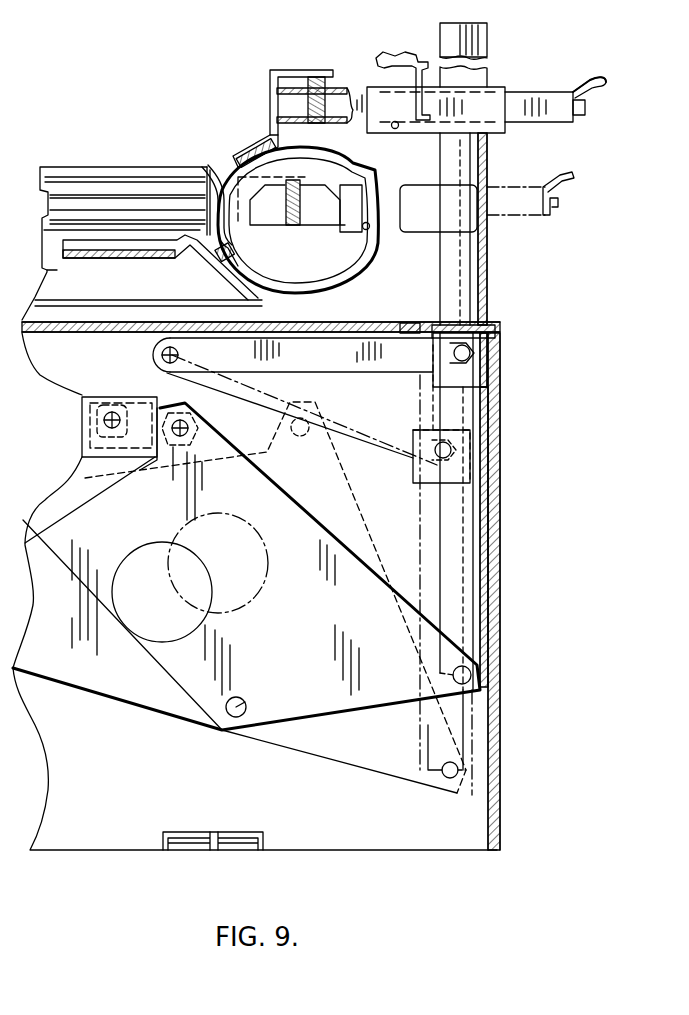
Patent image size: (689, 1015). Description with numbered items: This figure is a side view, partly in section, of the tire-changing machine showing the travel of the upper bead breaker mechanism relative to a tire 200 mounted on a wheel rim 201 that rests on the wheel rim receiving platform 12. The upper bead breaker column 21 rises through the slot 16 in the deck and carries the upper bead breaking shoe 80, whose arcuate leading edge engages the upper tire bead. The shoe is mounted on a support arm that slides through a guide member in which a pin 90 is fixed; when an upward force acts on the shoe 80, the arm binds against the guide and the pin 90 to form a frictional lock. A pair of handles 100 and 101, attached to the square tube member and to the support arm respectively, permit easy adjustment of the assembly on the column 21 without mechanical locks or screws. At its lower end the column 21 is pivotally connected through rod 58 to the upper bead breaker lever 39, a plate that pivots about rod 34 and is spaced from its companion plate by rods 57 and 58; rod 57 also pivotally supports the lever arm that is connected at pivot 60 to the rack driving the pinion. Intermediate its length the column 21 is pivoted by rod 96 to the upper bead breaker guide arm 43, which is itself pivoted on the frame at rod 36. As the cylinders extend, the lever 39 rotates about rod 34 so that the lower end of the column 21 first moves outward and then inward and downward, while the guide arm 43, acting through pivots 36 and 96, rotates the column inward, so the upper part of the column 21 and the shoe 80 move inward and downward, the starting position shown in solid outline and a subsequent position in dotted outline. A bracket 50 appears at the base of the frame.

The wheel rim receiving platform 12 is at (132, 240).
The slot 16 is at (412, 326).
The upper bead breaker column 21 is at (480, 277).
The rod 34 is at (245, 702).
The rod 36 is at (162, 355).
The upper bead breaker lever 39 is at (338, 611).
The upper bead breaker guide arm 43 is at (335, 352).
The bracket 50 is at (238, 828).
The rod 57 is at (196, 428).
The rod 58 is at (468, 668).
The pivotal connection 60 is at (104, 420).
The upper bead breaking shoe 80 is at (250, 84).
The pin 90 is at (385, 130).
The rod 96 is at (472, 355).
The handle 100 is at (396, 58).
The handle 101 is at (587, 78).
The tire 200 is at (375, 262).
The wheel rim 201 is at (210, 168).